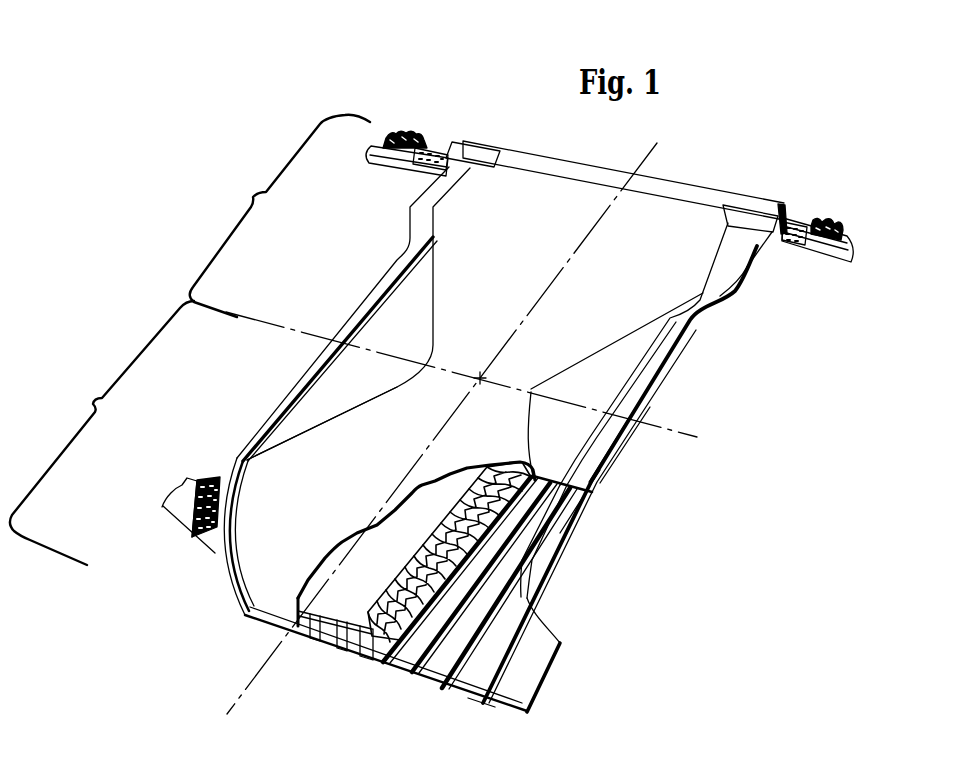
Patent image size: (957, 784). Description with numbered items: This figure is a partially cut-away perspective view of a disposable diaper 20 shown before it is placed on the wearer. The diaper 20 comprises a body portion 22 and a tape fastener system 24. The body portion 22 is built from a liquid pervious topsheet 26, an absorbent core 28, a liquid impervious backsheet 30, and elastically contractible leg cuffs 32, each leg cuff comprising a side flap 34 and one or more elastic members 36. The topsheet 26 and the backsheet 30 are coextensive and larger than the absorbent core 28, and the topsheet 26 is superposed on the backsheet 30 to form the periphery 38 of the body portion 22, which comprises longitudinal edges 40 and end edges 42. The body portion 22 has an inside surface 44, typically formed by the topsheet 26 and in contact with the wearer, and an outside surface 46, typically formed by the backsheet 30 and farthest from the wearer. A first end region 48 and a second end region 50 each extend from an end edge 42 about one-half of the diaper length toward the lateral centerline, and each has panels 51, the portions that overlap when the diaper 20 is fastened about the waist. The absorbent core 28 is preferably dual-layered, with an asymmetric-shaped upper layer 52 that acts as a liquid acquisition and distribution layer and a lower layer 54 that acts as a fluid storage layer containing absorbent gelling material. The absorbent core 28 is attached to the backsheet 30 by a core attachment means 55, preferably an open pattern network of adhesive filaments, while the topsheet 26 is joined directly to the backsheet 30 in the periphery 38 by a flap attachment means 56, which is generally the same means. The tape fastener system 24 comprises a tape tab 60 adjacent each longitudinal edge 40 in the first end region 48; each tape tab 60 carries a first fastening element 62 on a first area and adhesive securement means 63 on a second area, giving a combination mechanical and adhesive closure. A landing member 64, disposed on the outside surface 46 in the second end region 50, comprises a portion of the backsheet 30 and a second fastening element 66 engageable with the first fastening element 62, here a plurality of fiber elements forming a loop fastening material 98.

The diaper 20 is at (378, 108).
The body portion 22 is at (613, 493).
The tape fastener system 24 is at (772, 190).
The liquid pervious topsheet 26 is at (391, 321).
The absorbent core 28 is at (428, 583).
The liquid impervious backsheet 30 is at (210, 557).
The elastically contractible leg cuffs 32 is at (603, 441).
The side flap 34 is at (630, 352).
The elastic members 36 is at (547, 533).
The periphery 38 is at (300, 380).
The longitudinal edges 40 is at (398, 264).
The end edges 42 is at (536, 150).
The inside surface 44 is at (301, 489).
The outside surface 46 is at (610, 463).
The first end region 48 is at (280, 216).
The second end region 50 is at (102, 433).
The panels 51 is at (724, 272).
The upper layer 52 is at (385, 572).
The lower layer 54 is at (362, 655).
The core attachment means 55 is at (341, 648).
The flap attachment means 56 is at (482, 670).
The tape tab 60 is at (432, 130).
The first fastening element 62 is at (367, 144).
The adhesive securement means 63 is at (417, 172).
The landing member 64 is at (243, 457).
The second fastening element 66 is at (187, 506).
The loop fastening material 98 is at (210, 478).